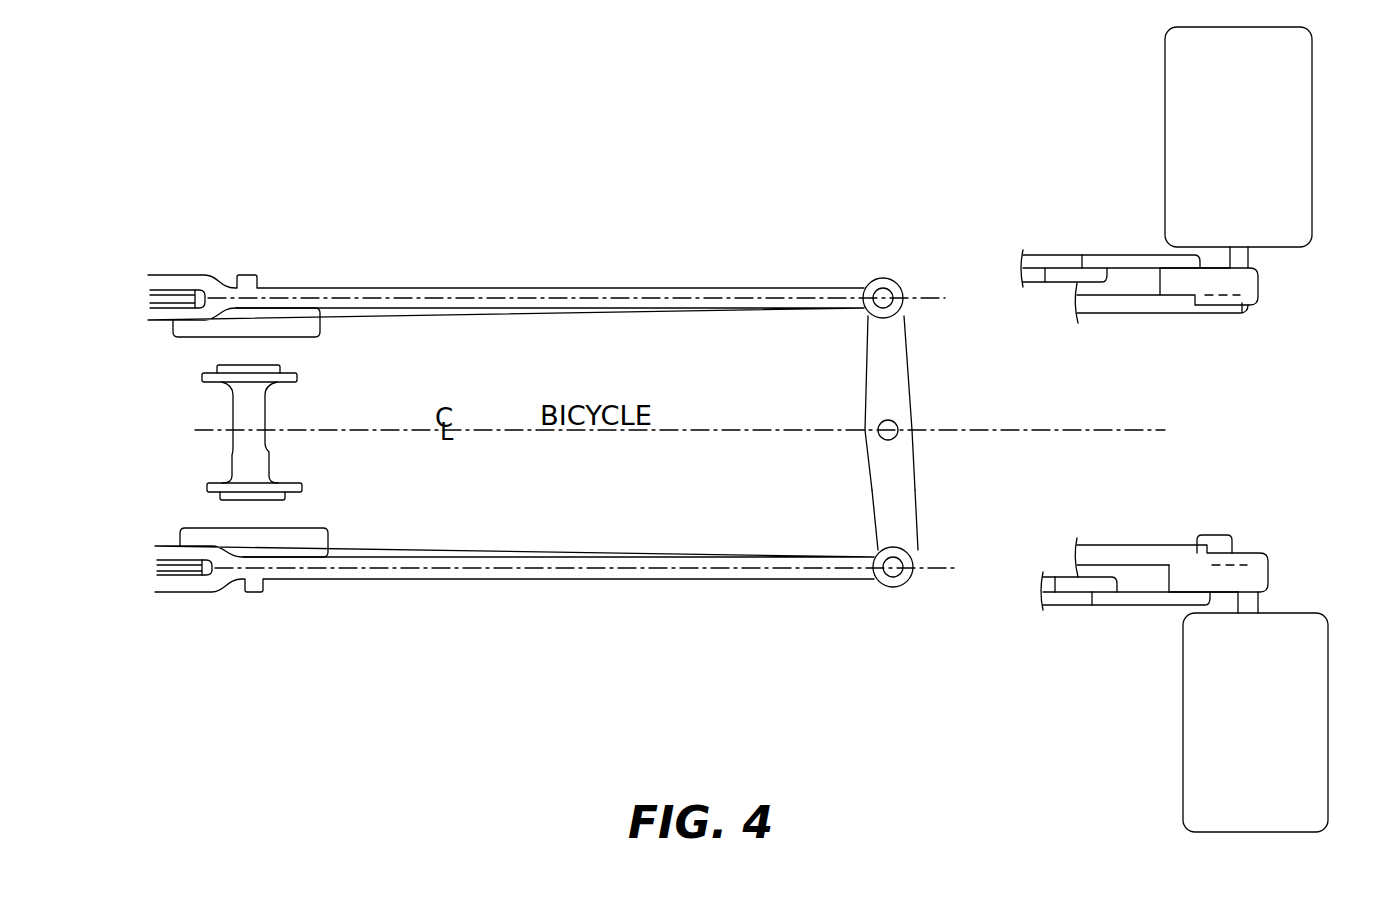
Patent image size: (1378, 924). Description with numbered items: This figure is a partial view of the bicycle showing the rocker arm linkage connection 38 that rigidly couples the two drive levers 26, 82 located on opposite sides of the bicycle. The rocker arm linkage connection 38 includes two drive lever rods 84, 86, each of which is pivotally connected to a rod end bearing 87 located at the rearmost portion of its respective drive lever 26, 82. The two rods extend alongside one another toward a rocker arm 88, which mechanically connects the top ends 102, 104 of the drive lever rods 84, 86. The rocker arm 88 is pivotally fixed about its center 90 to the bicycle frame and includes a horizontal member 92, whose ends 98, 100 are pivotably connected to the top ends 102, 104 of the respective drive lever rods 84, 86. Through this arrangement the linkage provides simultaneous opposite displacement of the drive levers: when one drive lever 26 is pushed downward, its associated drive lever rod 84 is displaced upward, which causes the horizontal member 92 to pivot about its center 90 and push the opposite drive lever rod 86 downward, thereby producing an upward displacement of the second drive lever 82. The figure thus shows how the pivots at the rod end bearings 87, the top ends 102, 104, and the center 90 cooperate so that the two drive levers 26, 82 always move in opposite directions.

The drive lever 26 is at (1125, 556).
The rocker arm linkage connection 38 is at (713, 188).
The drive lever 82 is at (1123, 313).
The drive lever rod 84 is at (505, 579).
The drive lever rod 86 is at (495, 297).
The rod end bearing 87 is at (147, 290).
The rocker arm 88 is at (906, 438).
The center 90 is at (895, 418).
The horizontal member 92 is at (893, 477).
The end of horizontal member 98 is at (897, 520).
The end of horizontal member 100 is at (890, 340).
The top end of drive lever rod 102 is at (859, 580).
The top end of drive lever rod 104 is at (861, 282).